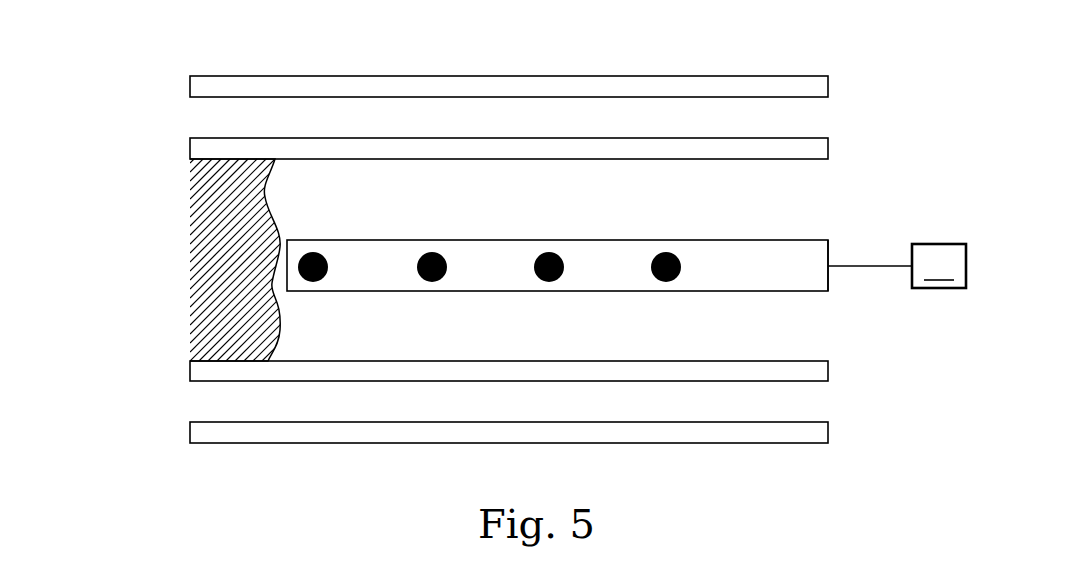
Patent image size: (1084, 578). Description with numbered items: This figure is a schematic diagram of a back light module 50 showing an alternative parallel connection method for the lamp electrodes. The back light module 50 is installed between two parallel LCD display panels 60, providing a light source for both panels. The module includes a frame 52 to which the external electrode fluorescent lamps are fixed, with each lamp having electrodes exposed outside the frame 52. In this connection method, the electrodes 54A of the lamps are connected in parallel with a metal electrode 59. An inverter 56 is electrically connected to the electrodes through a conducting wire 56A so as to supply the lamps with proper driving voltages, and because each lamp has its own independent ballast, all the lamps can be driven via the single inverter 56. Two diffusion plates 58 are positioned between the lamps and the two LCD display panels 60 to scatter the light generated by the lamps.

The back light module 50 is at (172, 200).
The frame 52 is at (190, 275).
The electrode 54A is at (322, 255).
The inverter 56 is at (939, 266).
The conducting wire 56A is at (863, 263).
The diffusion plate 58 is at (190, 138).
The metal electrode 59 is at (828, 288).
The LCD display panel 60 is at (190, 76).